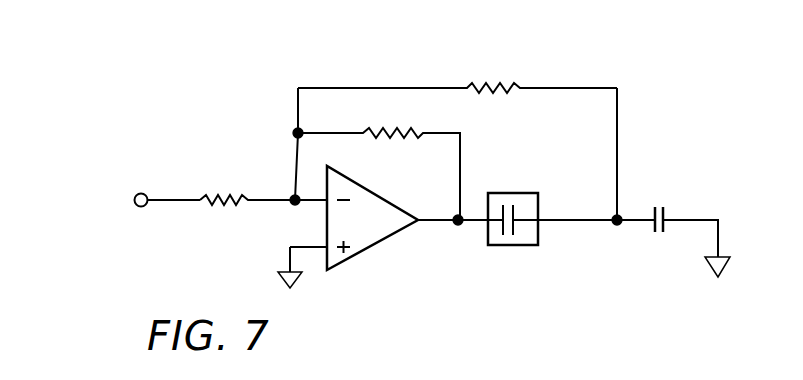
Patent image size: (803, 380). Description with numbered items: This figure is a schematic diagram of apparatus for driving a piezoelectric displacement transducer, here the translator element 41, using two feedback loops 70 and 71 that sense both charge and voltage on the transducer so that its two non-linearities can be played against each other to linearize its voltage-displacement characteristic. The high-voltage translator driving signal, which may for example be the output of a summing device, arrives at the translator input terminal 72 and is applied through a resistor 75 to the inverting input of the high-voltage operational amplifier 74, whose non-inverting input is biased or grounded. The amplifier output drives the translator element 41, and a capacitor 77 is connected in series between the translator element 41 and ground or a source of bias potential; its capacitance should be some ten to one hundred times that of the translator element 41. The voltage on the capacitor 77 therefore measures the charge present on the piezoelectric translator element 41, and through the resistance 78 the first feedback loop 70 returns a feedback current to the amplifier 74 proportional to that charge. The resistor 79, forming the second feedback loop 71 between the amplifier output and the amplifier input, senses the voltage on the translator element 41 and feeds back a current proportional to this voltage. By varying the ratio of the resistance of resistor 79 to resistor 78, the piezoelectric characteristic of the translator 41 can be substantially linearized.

The translator input terminal 72 is at (136, 195).
The resistor 75 is at (246, 168).
The resistance 78 is at (490, 86).
The resistor 79 is at (415, 132).
The second feedback loop 71 is at (429, 189).
The high-voltage amplifier 74 is at (370, 240).
The translator element 41 is at (515, 193).
The first feedback loop 70 is at (584, 167).
The capacitor 77 is at (660, 206).